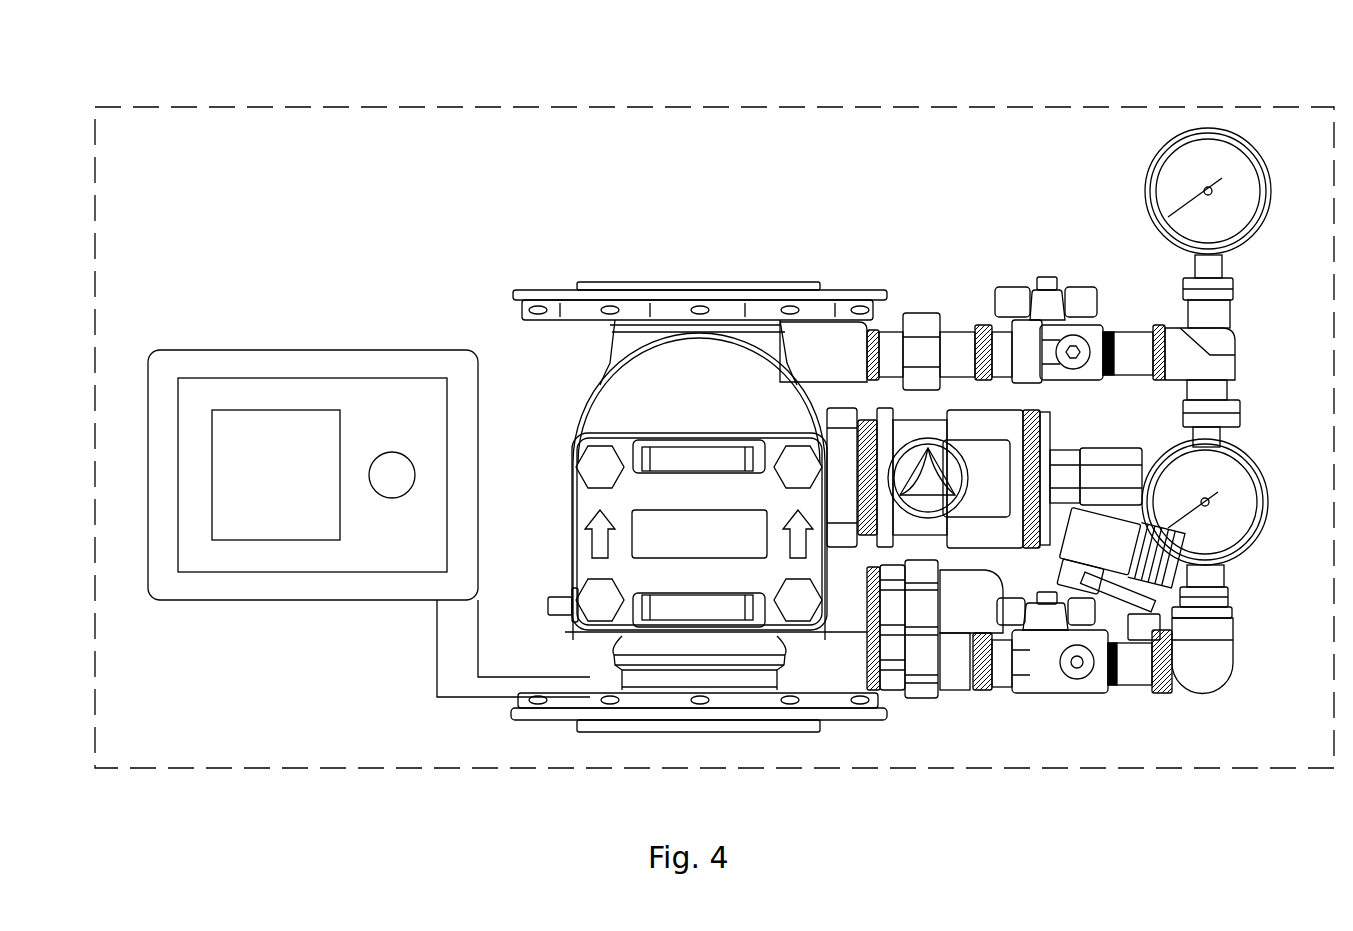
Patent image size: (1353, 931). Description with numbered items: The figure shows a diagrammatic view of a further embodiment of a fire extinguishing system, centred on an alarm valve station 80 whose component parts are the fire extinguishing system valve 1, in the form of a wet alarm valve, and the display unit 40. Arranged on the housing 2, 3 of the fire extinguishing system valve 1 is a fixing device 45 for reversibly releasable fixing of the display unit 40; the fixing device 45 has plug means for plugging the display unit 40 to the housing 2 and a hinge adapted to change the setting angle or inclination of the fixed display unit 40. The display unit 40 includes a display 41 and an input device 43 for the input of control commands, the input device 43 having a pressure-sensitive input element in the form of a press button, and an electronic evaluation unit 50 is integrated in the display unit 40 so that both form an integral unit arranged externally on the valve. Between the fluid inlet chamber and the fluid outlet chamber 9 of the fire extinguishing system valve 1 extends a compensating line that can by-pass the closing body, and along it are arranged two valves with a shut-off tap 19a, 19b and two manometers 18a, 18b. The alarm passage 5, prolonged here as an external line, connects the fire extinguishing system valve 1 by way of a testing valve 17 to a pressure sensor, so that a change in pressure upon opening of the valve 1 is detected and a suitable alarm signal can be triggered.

The fire extinguishing system valve 1 is at (635, 373).
The housing 2 is at (636, 678).
The housing 3 is at (705, 578).
The alarm passage 5 is at (978, 615).
The fluid outlet chamber 9 is at (698, 251).
The testing valve 17 is at (1105, 548).
The manometer 18a is at (1222, 522).
The manometer 18b is at (1185, 178).
The valve with shut-off tap 19a is at (1073, 712).
The valve with shut-off tap 19b is at (1031, 258).
The display unit 40 is at (222, 378).
The display 41 is at (250, 527).
The input device 43 is at (398, 470).
The fixing device 45 is at (458, 663).
The electronic evaluation unit 50 is at (288, 348).
The alarm valve station 80 is at (258, 106).